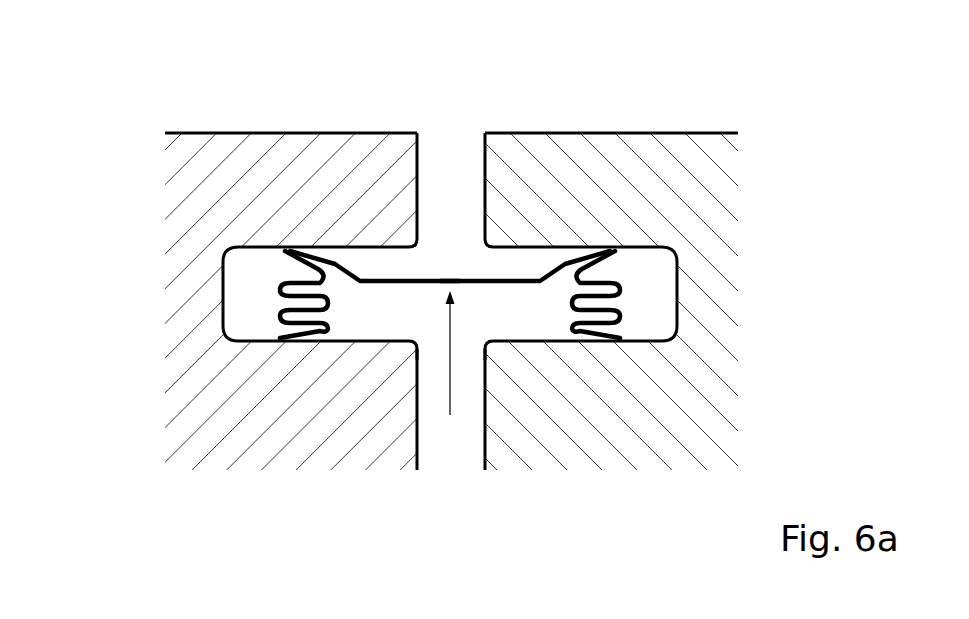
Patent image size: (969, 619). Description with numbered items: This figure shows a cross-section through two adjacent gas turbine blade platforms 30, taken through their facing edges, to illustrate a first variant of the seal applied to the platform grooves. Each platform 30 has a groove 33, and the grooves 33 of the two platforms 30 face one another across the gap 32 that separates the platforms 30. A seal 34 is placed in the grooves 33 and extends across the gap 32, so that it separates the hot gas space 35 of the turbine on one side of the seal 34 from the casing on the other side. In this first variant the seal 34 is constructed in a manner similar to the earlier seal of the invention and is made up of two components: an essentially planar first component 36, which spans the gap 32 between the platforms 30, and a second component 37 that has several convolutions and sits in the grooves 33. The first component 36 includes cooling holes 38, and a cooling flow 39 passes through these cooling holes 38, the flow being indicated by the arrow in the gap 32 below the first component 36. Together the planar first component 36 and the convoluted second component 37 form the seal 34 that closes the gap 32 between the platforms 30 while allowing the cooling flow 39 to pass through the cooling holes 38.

The platform 30 is at (252, 430).
The gap 32 is at (450, 438).
The groove 33 is at (240, 298).
The seal 34 is at (304, 105).
The hot gas space 35 is at (477, 175).
The first component 36 is at (494, 272).
The second component 37 is at (621, 273).
The cooling hole 38 is at (448, 272).
The cooling flow 39 is at (455, 356).